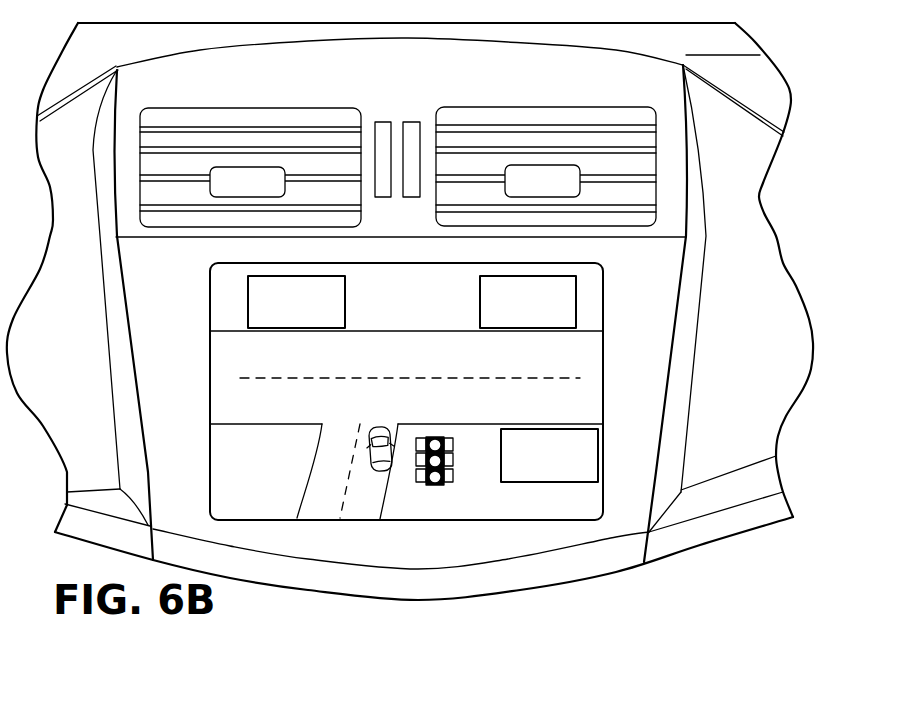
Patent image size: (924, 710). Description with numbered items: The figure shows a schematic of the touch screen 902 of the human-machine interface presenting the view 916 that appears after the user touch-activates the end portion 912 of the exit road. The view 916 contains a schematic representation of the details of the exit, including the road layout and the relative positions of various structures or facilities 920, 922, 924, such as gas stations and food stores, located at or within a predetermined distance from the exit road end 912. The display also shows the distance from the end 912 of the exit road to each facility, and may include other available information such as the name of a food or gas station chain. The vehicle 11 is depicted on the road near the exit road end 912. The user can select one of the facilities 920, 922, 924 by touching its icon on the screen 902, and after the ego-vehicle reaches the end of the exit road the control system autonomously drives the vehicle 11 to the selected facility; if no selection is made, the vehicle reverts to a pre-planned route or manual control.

The touch screen 902 is at (603, 361).
The end portion of the exit road 912 is at (340, 436).
The view 916 is at (603, 316).
The facility 920 is at (248, 302).
The facility 922 is at (571, 278).
The facility 924 is at (548, 482).
The vehicle 11 is at (380, 472).